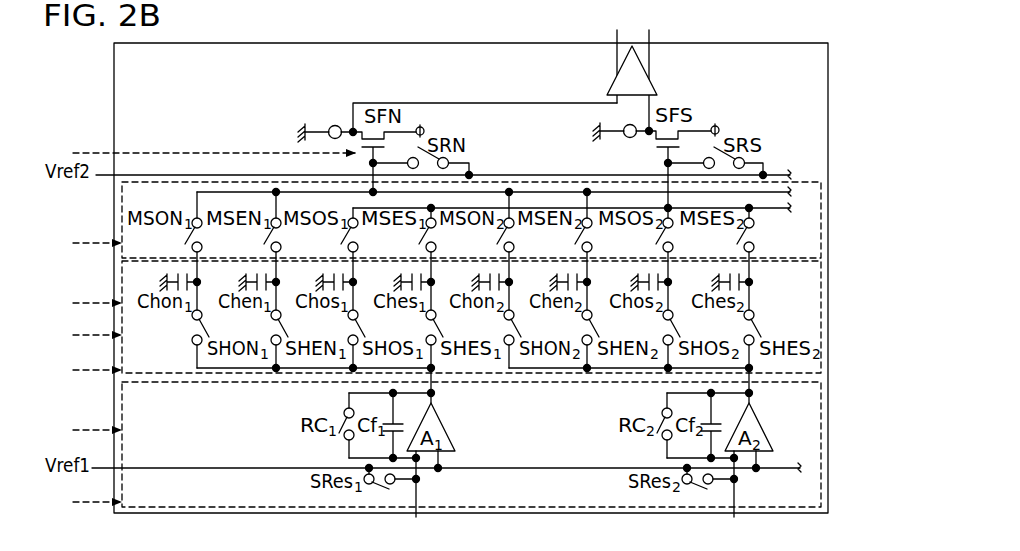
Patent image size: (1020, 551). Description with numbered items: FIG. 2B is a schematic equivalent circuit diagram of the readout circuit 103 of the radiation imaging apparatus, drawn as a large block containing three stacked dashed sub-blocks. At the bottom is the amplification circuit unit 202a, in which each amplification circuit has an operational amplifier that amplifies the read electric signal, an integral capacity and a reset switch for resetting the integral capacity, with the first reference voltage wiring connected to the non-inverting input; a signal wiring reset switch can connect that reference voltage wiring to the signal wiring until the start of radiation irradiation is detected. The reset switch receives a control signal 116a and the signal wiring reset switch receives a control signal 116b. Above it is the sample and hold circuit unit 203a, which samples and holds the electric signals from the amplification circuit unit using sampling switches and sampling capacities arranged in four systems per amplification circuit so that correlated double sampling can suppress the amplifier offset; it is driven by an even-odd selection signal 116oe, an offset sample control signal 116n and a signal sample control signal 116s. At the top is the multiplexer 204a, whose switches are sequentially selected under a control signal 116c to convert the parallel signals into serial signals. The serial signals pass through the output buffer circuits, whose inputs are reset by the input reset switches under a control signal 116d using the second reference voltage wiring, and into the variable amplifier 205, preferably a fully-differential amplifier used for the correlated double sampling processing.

The readout circuit 103 is at (113, 90).
The variable amplifier 205 is at (647, 63).
The control signal 116d is at (100, 153).
The multiplexer 204a is at (120, 203).
The control signal 116c is at (102, 244).
The sample and hold circuit unit 203a is at (120, 270).
The even-odd selection signal 116oe is at (102, 303).
The offset sample control signal 116n is at (102, 335).
The signal sample control signal 116s is at (102, 370).
The amplification circuit unit 202a is at (120, 384).
The control signal 116a is at (102, 430).
The control signal 116b is at (102, 502).